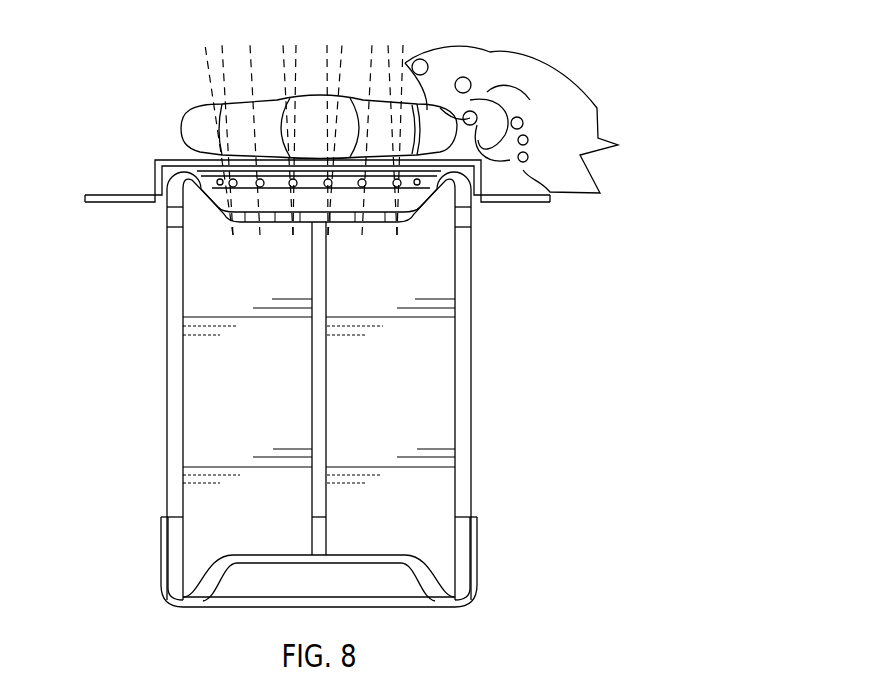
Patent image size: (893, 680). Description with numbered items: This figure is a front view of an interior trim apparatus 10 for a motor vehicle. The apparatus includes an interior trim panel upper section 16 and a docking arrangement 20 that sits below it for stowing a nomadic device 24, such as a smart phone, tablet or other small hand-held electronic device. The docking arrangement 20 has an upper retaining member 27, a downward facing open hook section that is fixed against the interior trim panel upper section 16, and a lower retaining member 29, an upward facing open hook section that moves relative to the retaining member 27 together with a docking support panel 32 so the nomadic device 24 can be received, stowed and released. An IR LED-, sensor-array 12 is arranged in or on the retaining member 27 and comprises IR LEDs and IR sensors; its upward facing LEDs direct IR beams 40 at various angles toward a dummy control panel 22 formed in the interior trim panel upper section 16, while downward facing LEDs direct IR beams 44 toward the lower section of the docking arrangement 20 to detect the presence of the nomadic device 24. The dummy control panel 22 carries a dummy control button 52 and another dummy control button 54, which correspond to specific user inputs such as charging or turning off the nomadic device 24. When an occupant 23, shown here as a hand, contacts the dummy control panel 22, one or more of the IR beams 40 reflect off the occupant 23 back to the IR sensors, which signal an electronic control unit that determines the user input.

The interior trim apparatus 10 is at (96, 42).
The IR LED-, sensor-array 12 is at (200, 175).
The interior trim panel upper section 16 is at (121, 195).
The docking arrangement 20 is at (469, 388).
The dummy control panel 22 is at (425, 100).
The occupant 23 is at (555, 87).
The nomadic device 24 is at (430, 352).
The retaining member 27 is at (474, 218).
The retaining member 29 is at (471, 545).
The docking support panel 32 is at (466, 436).
The IR beams 40 is at (333, 57).
The IR beams 44 is at (220, 228).
The dummy control button 52 is at (190, 117).
The dummy control button 54 is at (440, 105).